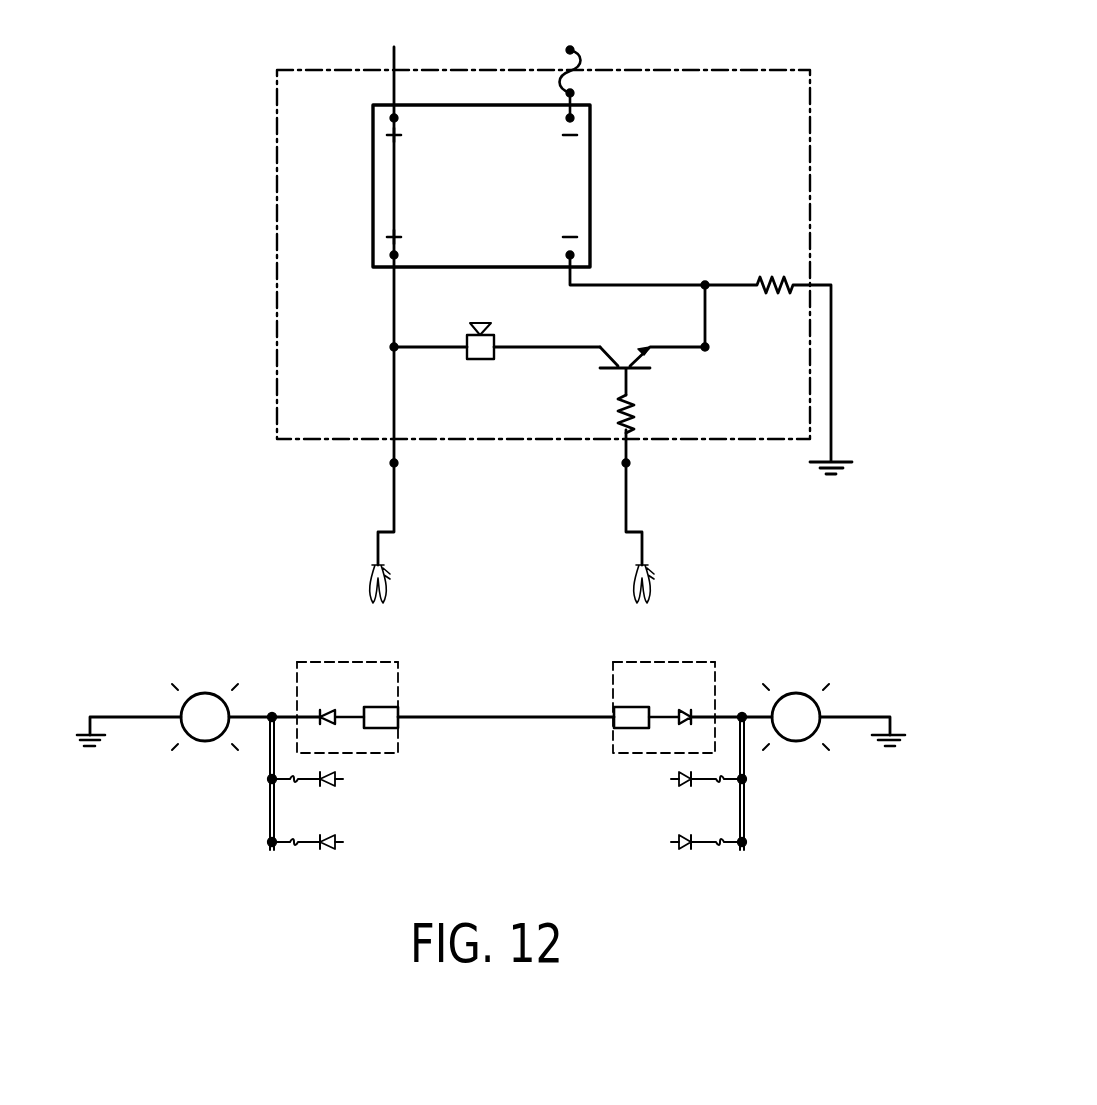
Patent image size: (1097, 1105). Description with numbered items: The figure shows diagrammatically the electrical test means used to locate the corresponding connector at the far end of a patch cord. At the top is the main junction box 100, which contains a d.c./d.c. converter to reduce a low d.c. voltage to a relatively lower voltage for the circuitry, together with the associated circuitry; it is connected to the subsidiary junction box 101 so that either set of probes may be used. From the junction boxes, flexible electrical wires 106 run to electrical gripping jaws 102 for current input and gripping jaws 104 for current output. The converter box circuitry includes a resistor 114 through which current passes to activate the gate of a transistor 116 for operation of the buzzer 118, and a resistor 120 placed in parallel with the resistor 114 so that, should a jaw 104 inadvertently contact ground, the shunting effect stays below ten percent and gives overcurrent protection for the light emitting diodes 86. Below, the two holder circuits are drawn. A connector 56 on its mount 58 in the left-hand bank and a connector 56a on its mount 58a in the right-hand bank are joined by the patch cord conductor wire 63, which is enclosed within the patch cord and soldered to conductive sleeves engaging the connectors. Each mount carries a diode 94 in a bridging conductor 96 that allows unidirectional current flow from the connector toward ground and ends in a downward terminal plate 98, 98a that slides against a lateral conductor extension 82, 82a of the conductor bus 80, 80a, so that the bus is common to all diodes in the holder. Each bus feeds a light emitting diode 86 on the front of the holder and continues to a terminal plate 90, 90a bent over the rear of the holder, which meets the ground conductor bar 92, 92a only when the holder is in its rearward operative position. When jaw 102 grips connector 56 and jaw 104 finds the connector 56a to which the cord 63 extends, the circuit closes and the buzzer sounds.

The main junction box 100 is at (753, 68).
The subsidiary junction box 101 is at (590, 145).
The gripping jaw 102 is at (370, 580).
The gripping jaw 104 is at (634, 580).
The flexible electrical wire 106 is at (394, 400).
The resistor 114 is at (636, 415).
The transistor 116 is at (626, 365).
The buzzer 118 is at (480, 359).
The resistor 120 is at (767, 277).
The connector 56 is at (398, 707).
The connector 56a is at (614, 708).
The connector mount 58 is at (395, 662).
The connector mount 58a is at (633, 662).
The conductor wire 63 is at (501, 718).
The conductor bus 80 is at (270, 808).
The conductor bus 80a is at (743, 811).
The lateral conductor extension 82 is at (275, 715).
The lateral conductor extension 82a is at (742, 714).
The light emitting diode 86 is at (200, 693).
The terminal plate 90 is at (108, 712).
The terminal plate 90a is at (872, 717).
The ground conductor bar 92 is at (95, 745).
The ground conductor bar 92a is at (884, 745).
The diode 94 is at (335, 726).
The bridging conductor 96 is at (335, 712).
The terminal plate 98 is at (300, 713).
The terminal plate 98a is at (705, 713).